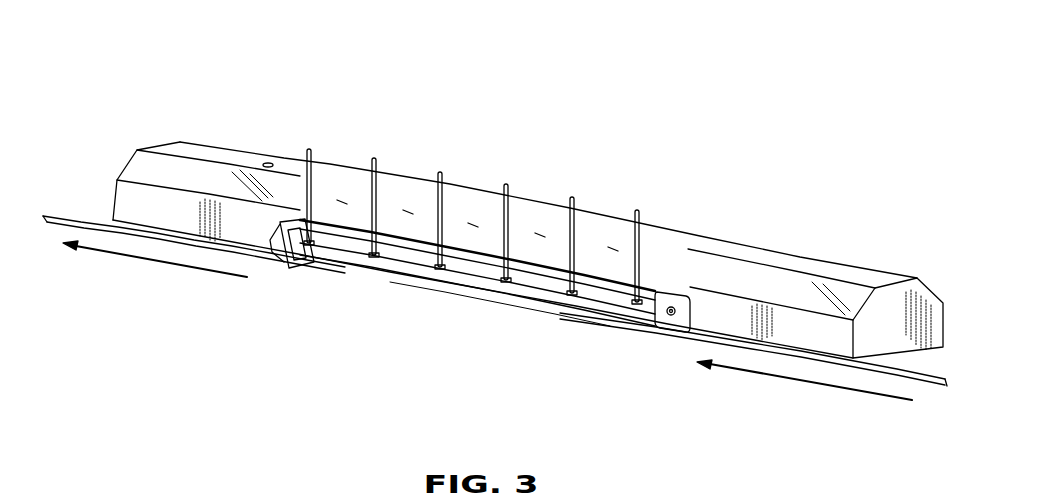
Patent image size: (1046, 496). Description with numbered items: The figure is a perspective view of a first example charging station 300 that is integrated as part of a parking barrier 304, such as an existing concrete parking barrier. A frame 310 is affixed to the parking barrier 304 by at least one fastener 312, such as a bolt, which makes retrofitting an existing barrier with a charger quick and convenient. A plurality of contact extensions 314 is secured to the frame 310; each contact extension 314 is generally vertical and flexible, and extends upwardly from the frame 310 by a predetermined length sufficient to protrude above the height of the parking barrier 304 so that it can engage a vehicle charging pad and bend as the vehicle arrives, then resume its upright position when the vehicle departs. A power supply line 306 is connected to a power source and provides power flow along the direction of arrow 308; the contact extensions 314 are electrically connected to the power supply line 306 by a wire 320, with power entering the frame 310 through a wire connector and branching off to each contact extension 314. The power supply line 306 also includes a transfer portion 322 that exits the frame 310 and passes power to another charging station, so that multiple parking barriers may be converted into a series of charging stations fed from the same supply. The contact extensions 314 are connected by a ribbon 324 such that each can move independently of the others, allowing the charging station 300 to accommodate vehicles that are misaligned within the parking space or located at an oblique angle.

The charging station 300 is at (610, 118).
The parking barrier 304 is at (940, 300).
The power supply line 306 is at (923, 384).
The arrow 308 is at (823, 388).
The frame 310 is at (582, 322).
The fastener 312 is at (266, 268).
The contact extension 314 is at (315, 183).
The wire 320 is at (356, 262).
The transfer portion 322 is at (72, 213).
The ribbon 324 is at (337, 200).